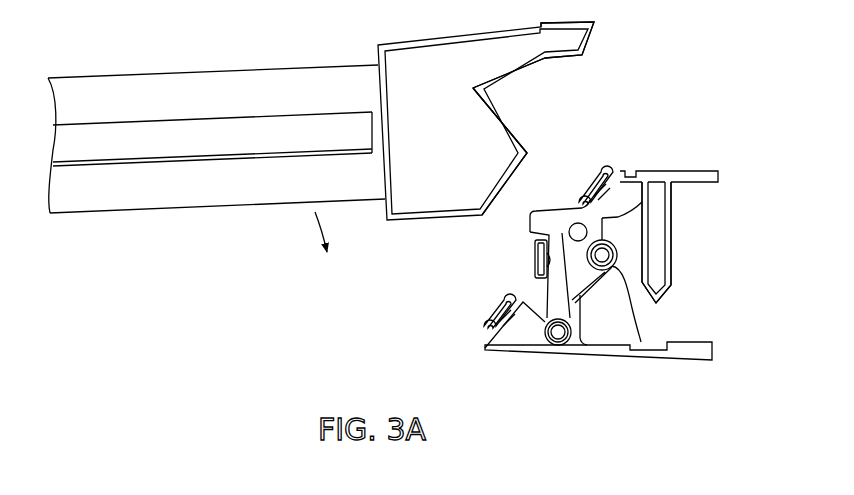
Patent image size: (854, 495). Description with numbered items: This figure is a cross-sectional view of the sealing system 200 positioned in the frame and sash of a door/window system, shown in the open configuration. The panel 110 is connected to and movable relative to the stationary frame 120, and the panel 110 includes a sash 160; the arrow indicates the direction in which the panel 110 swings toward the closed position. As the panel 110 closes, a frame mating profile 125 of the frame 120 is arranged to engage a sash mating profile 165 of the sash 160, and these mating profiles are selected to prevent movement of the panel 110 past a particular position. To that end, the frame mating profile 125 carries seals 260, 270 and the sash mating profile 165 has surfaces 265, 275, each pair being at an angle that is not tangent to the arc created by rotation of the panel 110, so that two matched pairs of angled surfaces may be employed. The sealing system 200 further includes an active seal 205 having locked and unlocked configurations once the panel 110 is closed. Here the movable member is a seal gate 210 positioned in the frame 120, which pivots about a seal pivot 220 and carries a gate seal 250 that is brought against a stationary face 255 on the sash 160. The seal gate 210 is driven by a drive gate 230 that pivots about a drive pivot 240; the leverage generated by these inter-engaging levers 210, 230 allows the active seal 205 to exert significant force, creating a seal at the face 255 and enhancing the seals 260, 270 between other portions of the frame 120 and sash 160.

The panel 110 is at (155, 212).
The stationary frame 120 is at (613, 357).
The frame mating profile 125 is at (497, 276).
The sash 160 is at (383, 220).
The sash mating profile 165 is at (552, 113).
The sealing system 200 is at (674, 103).
The active seal 205 is at (513, 262).
The seal gate 210 is at (548, 284).
The seal pivot 220 is at (555, 350).
The drive gate 230 is at (606, 270).
The drive pivot 240 is at (650, 305).
The gate seal 250 is at (535, 250).
The stationary face 255 is at (513, 130).
The angled surface seal 260 is at (487, 325).
The angled surface 265 is at (515, 172).
The angled surface seal 270 is at (600, 172).
The angled surface 275 is at (595, 40).